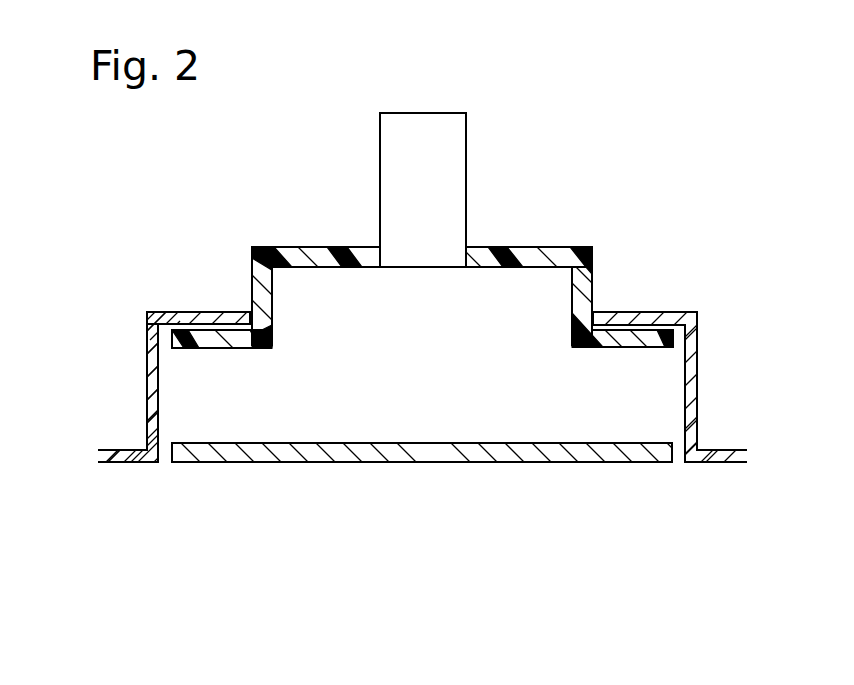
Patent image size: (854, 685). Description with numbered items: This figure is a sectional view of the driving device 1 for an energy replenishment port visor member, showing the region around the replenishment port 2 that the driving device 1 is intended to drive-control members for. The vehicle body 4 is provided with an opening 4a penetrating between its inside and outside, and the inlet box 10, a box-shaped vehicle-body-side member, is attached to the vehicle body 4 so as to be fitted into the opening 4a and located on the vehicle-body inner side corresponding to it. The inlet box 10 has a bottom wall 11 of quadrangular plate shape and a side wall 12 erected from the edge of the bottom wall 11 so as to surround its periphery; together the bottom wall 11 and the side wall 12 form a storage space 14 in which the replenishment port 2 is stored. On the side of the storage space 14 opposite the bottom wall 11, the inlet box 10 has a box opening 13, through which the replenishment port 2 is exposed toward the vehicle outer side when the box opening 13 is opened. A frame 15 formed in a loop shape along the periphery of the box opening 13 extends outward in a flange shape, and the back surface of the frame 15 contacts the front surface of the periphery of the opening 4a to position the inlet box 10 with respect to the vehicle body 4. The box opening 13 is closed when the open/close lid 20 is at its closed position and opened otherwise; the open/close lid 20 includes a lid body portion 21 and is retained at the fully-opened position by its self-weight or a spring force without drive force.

The driving device 1 is at (216, 474).
The replenishment port 2 is at (430, 268).
The vehicle body 4 is at (130, 456).
The opening 4a is at (252, 316).
The inlet box 10 is at (592, 245).
The bottom wall 11 is at (330, 250).
The side wall 12 is at (578, 294).
The box opening 13 is at (572, 337).
The storage space 14 is at (485, 280).
The frame 15 is at (211, 338).
The open/close lid 20 is at (426, 462).
The lid body portion 21 is at (422, 452).